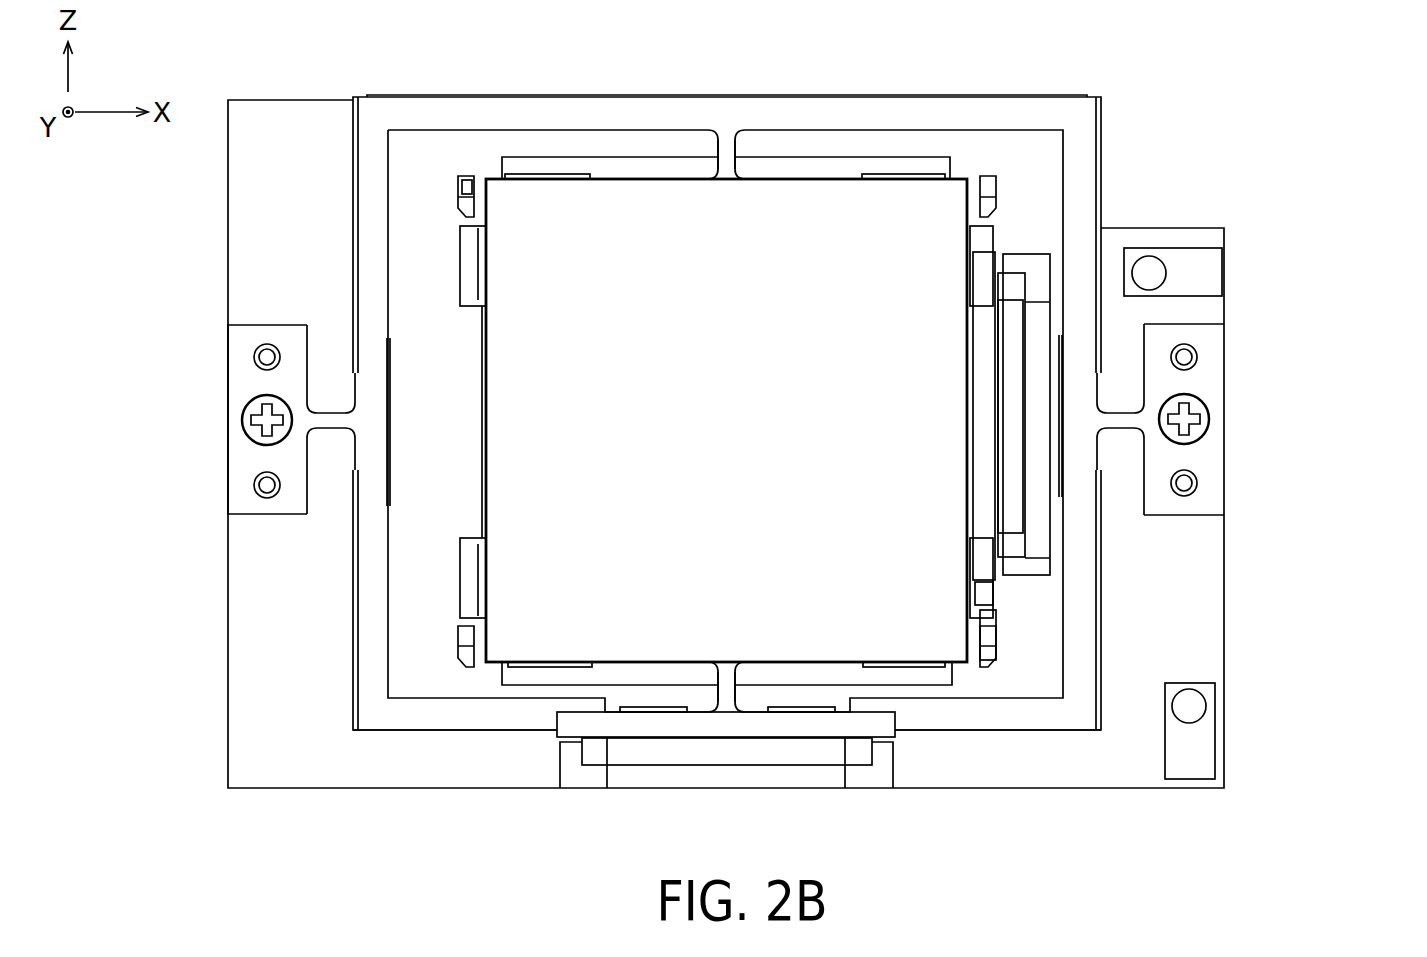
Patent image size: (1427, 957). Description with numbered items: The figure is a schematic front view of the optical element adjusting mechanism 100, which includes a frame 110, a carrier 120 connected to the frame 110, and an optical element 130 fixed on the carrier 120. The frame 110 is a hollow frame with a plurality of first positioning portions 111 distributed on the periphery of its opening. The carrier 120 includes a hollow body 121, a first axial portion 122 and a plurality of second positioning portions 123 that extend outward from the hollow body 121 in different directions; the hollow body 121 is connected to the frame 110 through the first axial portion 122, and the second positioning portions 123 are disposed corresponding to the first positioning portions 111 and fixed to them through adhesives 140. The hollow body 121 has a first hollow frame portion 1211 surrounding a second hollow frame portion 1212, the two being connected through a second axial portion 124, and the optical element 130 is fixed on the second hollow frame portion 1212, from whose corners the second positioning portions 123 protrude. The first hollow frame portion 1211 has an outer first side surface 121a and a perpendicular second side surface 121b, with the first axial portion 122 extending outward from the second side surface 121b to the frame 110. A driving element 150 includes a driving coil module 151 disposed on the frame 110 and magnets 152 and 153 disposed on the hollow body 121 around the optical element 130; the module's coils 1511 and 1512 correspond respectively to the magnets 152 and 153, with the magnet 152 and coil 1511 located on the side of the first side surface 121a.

The optical element adjusting mechanism 100 is at (1355, 846).
The frame 110 is at (240, 175).
The first positioning portion 111 is at (468, 173).
The carrier 120 is at (638, 436).
The hollow body 121 is at (710, 436).
The first hollow frame portion 1211 is at (833, 110).
The second hollow frame portion 1212 is at (470, 655).
The first side surface 121a is at (510, 735).
The second side surface 121b is at (353, 387).
The first axial portion 122 is at (335, 425).
The second positioning portion 123 is at (474, 189).
The second axial portion 124 is at (725, 152).
The optical element 130 is at (645, 212).
The adhesive 140 is at (468, 208).
The driving element 150 is at (983, 555).
The driving coil module 151 is at (983, 566).
The coil 1511 is at (813, 752).
The coil 1512 is at (1012, 410).
The magnet 152 is at (833, 725).
The magnet 153 is at (982, 373).